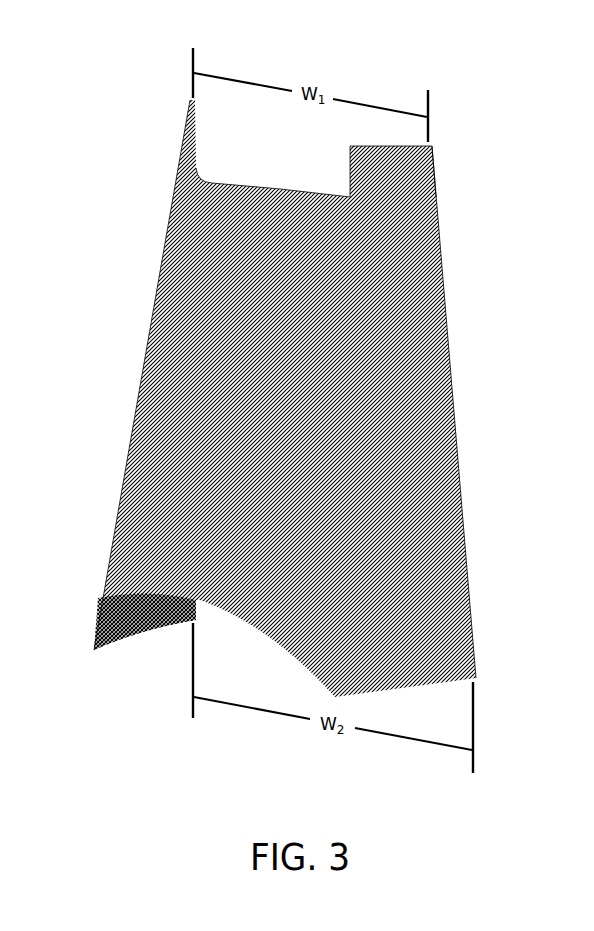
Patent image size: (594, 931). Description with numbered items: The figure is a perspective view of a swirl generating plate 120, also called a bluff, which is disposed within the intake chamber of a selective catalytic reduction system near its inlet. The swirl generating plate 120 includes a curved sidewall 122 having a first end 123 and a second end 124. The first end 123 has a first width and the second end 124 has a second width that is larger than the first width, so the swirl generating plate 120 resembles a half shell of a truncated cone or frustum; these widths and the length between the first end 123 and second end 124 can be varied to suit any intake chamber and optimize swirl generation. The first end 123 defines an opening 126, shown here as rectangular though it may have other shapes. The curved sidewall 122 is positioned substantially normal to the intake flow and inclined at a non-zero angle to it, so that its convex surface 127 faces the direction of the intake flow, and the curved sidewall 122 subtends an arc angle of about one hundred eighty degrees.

The swirl generating plate 120 is at (156, 74).
The curved sidewall 122 is at (147, 363).
The first end 123 is at (412, 169).
The second end 124 is at (460, 660).
The opening 126 is at (250, 190).
The convex surface 127 is at (164, 454).